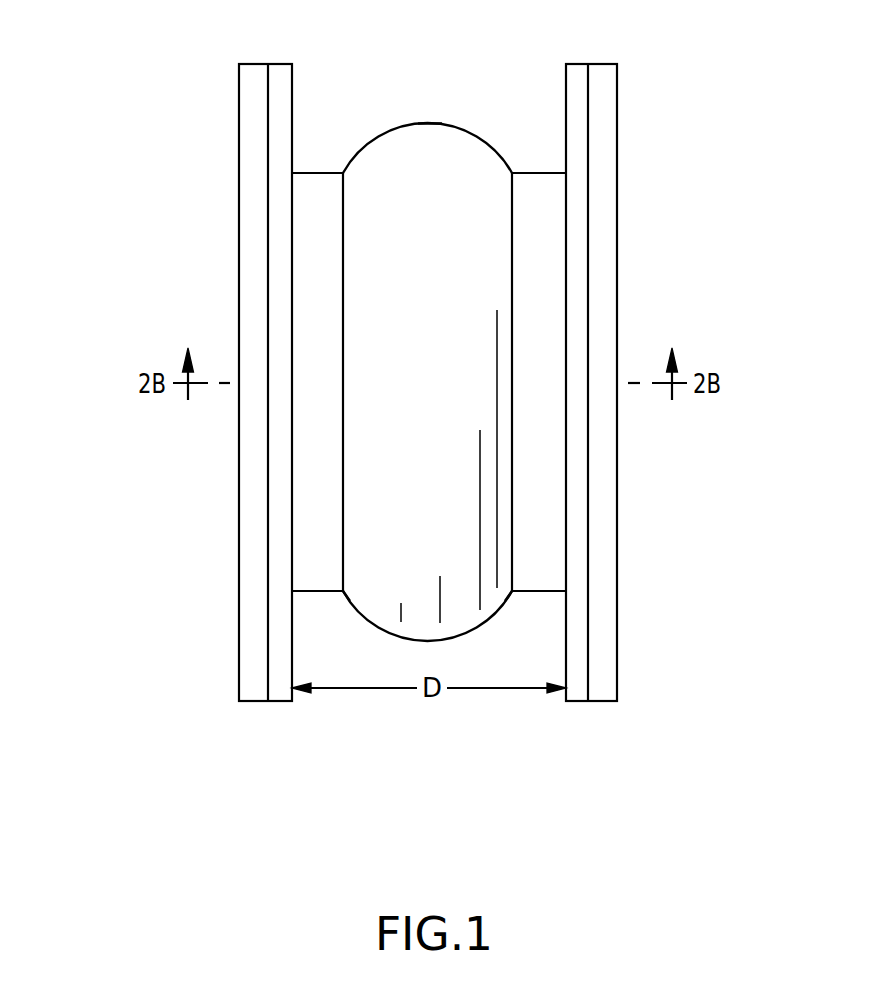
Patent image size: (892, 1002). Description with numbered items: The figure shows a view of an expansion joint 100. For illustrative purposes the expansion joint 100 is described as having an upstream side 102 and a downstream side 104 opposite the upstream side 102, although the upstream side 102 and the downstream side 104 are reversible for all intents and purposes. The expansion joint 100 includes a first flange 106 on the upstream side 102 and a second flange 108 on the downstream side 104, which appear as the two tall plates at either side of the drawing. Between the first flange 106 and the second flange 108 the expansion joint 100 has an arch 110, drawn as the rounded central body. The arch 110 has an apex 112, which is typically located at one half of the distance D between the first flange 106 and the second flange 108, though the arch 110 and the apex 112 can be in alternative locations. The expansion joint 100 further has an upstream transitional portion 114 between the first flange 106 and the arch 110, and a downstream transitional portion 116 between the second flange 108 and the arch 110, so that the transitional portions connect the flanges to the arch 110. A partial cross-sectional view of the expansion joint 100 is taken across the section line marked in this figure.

The expansion joint 100 is at (435, 406).
The upstream side 102 is at (678, 433).
The downstream side 104 is at (159, 433).
The first flange 106 is at (597, 701).
The second flange 108 is at (253, 701).
The arch 110 is at (382, 133).
The apex 112 is at (432, 122).
The upstream transitional portion 114 is at (537, 592).
The downstream transitional portion 116 is at (317, 591).